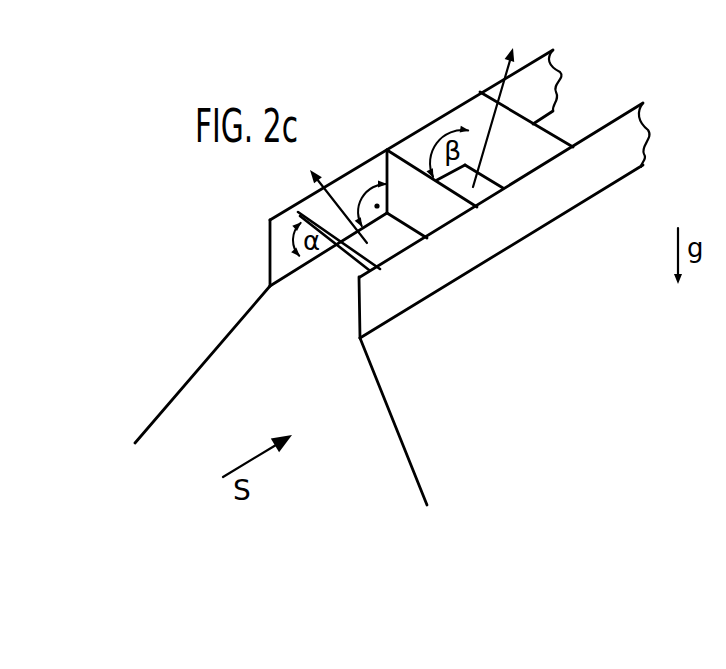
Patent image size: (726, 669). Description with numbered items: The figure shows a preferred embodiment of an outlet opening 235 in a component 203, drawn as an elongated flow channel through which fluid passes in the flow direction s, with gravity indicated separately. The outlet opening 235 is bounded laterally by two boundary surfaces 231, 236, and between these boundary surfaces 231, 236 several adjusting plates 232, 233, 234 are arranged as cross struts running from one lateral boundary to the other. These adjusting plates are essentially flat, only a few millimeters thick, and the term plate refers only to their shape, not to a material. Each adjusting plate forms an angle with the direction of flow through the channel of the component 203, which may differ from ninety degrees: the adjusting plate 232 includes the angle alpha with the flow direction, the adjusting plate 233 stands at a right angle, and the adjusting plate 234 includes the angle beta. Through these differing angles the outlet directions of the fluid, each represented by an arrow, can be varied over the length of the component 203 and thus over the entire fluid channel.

The component 203 is at (392, 277).
The boundary surface 231 is at (559, 208).
The adjusting plate 232 is at (337, 248).
The adjusting plate 233 is at (398, 163).
The adjusting plate 234 is at (552, 133).
The outlet opening 235 is at (342, 330).
The boundary surface 236 is at (276, 248).